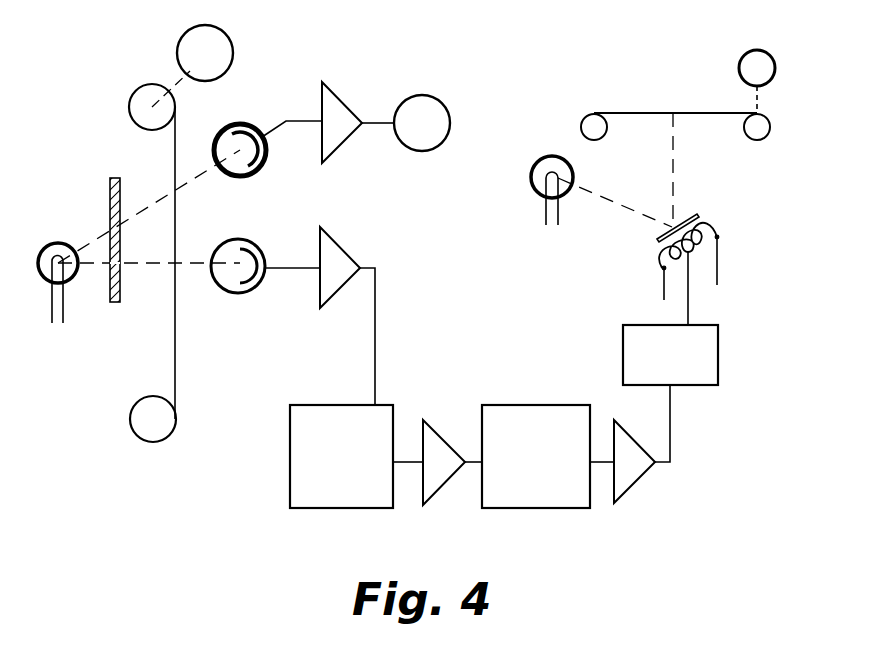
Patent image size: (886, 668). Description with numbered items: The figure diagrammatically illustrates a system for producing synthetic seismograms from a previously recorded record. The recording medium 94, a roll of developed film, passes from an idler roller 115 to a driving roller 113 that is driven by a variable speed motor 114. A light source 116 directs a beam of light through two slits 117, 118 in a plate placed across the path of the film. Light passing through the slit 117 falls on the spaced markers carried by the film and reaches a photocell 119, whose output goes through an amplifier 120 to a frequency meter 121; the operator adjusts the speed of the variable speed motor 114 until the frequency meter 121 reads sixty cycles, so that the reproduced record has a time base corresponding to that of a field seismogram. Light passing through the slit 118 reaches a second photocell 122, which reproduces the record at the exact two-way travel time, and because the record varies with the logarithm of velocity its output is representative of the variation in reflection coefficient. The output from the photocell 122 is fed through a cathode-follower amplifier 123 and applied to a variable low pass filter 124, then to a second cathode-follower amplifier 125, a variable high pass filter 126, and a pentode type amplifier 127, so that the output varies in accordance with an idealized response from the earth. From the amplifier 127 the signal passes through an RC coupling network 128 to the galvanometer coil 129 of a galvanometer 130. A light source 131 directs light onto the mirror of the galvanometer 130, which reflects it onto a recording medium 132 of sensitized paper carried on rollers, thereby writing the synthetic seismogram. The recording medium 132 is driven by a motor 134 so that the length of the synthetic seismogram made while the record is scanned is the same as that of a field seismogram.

The recording medium 94 is at (175, 332).
The driving roller 113 is at (130, 102).
The variable speed motor 114 is at (230, 52).
The idler roller 115 is at (133, 422).
The light source 116 is at (60, 245).
The slit 117 is at (110, 230).
The slit 118 is at (120, 267).
The photocell 119 is at (233, 122).
The amplifier 120 is at (340, 97).
The frequency meter 121 is at (442, 104).
The photocell 122 is at (244, 282).
The amplifier 123 is at (347, 252).
The variable low pass filter 124 is at (290, 468).
The second amplifier 125 is at (435, 493).
The variable high pass filter 126 is at (552, 510).
The amplifier 127 is at (640, 475).
The RC coupling network 128 is at (688, 370).
The galvanometer coil 129 is at (661, 266).
The galvanometer 130 is at (758, 224).
The light source 131 is at (540, 167).
The recording medium 132 is at (610, 112).
The motor 134 is at (763, 53).